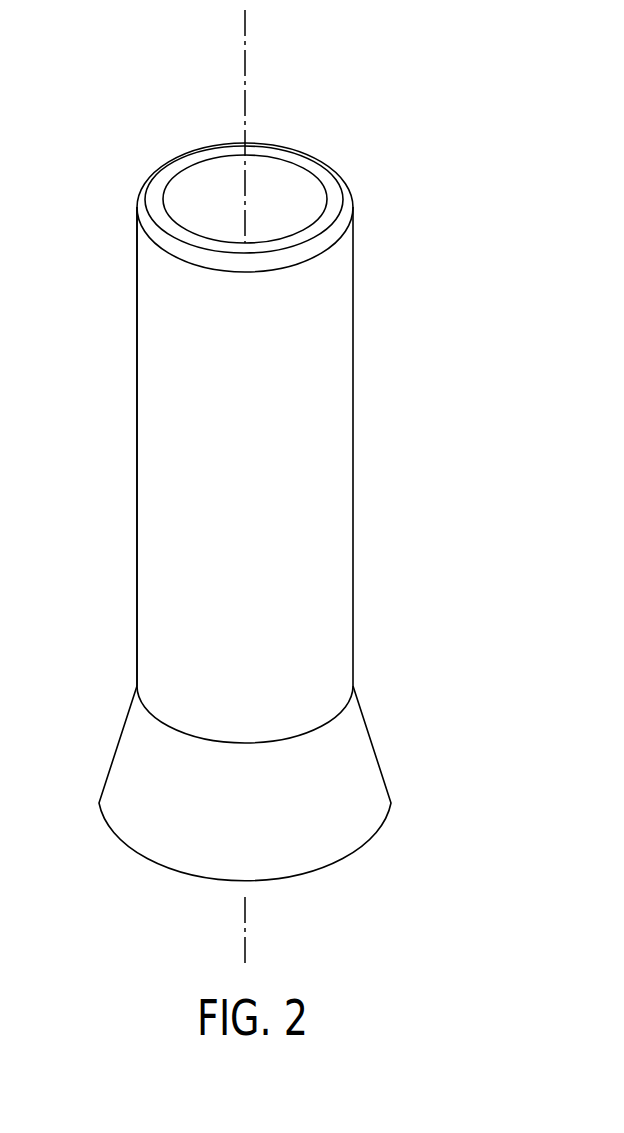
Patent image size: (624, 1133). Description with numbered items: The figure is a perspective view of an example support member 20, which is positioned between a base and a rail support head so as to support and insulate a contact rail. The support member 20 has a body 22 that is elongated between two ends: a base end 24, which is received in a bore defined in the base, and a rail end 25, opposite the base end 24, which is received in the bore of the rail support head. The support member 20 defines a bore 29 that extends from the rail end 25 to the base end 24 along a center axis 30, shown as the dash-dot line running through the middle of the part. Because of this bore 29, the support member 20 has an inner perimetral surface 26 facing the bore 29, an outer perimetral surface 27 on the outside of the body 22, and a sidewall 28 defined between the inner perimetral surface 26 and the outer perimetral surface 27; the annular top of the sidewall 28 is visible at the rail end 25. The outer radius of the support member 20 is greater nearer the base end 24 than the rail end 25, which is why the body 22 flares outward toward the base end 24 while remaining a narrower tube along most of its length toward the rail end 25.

The support member 20 is at (415, 366).
The body 22 is at (338, 476).
The base end 24 is at (368, 775).
The rail end 25 is at (345, 253).
The inner perimetral surface 26 is at (313, 197).
The outer perimetral surface 27 is at (137, 545).
The sidewall 28 is at (158, 200).
The bore 29 is at (195, 172).
The center axis 30 is at (250, 50).